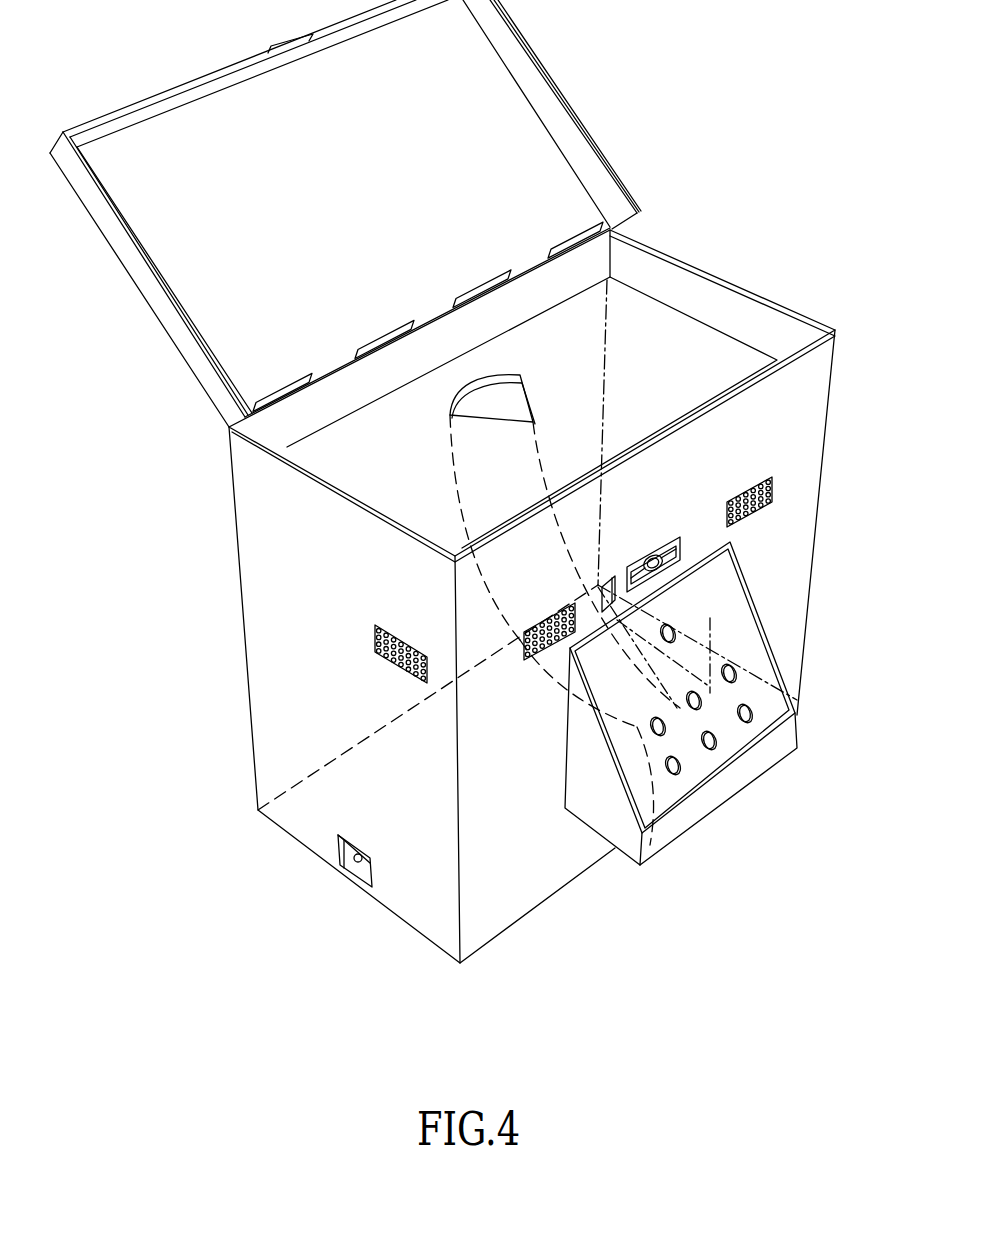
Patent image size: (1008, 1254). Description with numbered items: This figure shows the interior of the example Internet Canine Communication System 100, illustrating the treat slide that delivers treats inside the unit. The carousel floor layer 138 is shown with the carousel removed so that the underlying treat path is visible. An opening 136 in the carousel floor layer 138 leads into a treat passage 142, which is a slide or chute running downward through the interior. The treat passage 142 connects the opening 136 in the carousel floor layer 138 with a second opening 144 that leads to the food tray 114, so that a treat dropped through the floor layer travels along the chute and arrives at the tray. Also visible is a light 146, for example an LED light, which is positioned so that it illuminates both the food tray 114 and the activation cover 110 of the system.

The Internet Canine Communication System 100 is at (763, 138).
The activation cover 110 is at (743, 650).
The food tray 114 is at (758, 757).
The opening 136 is at (493, 407).
The carousel floor layer 138 is at (680, 333).
The treat passage 142 is at (497, 600).
The opening 144 is at (650, 845).
The light 146 is at (677, 630).